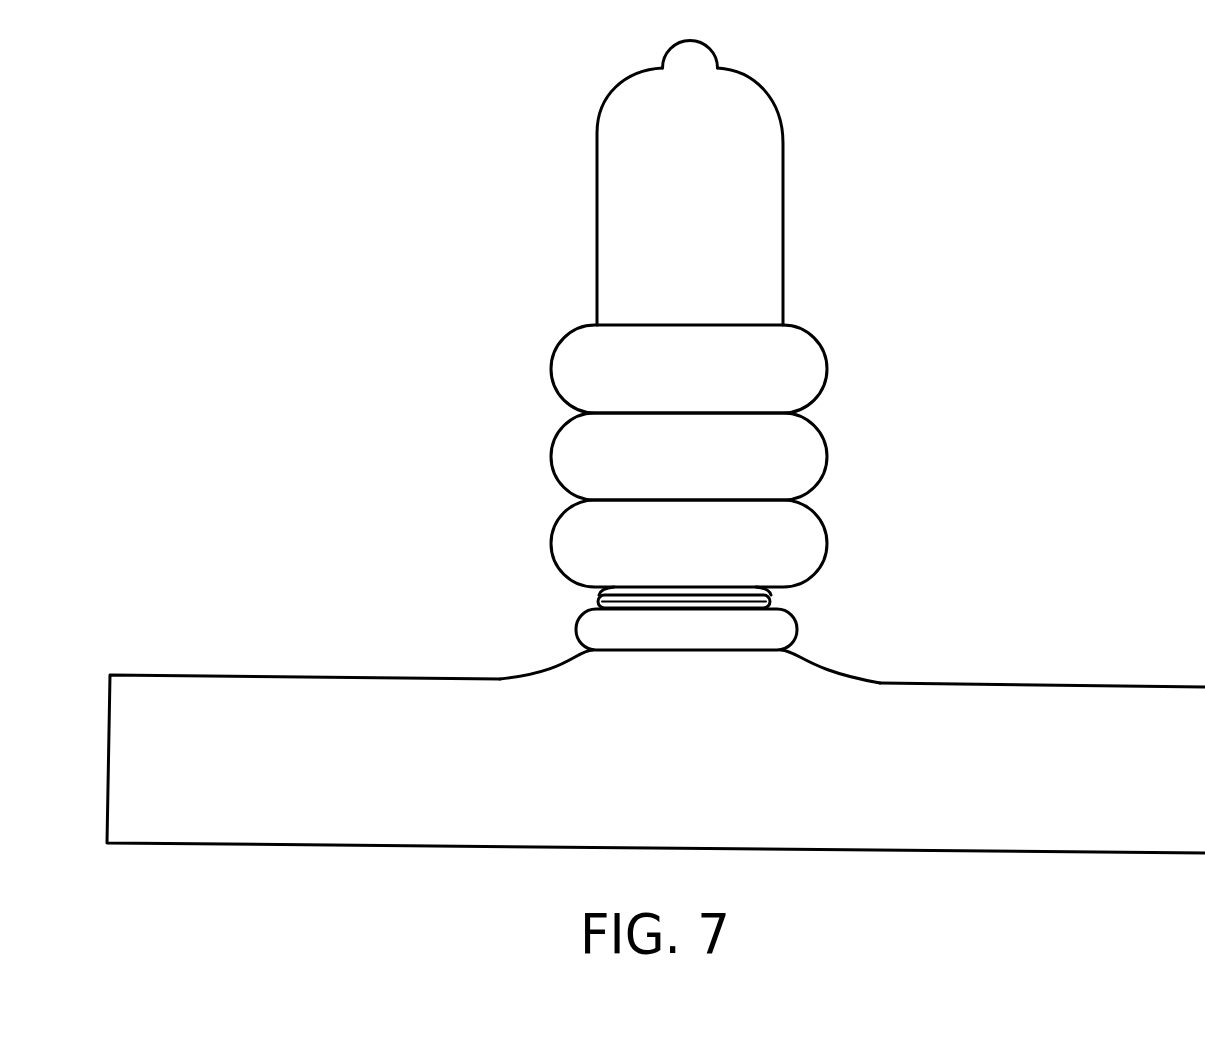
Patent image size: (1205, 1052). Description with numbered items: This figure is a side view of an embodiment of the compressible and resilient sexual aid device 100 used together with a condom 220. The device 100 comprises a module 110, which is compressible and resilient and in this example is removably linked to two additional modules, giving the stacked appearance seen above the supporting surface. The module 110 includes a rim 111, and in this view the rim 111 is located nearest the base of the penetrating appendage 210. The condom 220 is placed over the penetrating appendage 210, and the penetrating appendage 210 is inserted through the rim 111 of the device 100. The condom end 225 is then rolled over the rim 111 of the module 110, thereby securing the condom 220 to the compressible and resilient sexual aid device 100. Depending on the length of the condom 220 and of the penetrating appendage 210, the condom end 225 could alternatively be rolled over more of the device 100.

The compressible and resilient sexual aid device 100 is at (734, 362).
The module 110 is at (612, 546).
The rim 111 is at (588, 632).
The penetrating appendage 210 is at (664, 211).
The condom 220 is at (787, 178).
The condom end 225 is at (763, 602).